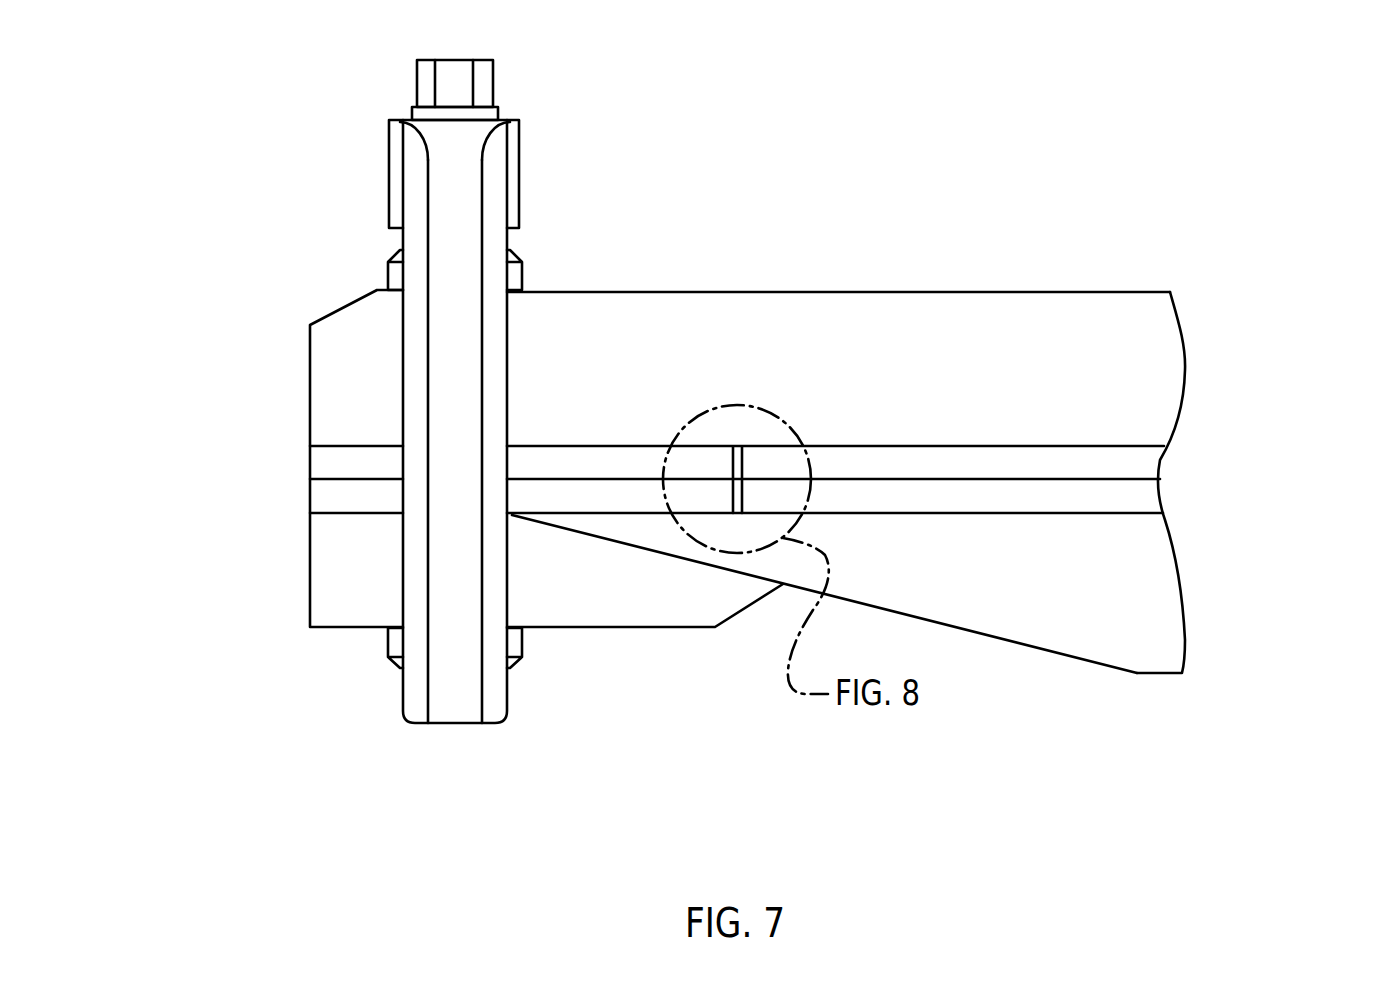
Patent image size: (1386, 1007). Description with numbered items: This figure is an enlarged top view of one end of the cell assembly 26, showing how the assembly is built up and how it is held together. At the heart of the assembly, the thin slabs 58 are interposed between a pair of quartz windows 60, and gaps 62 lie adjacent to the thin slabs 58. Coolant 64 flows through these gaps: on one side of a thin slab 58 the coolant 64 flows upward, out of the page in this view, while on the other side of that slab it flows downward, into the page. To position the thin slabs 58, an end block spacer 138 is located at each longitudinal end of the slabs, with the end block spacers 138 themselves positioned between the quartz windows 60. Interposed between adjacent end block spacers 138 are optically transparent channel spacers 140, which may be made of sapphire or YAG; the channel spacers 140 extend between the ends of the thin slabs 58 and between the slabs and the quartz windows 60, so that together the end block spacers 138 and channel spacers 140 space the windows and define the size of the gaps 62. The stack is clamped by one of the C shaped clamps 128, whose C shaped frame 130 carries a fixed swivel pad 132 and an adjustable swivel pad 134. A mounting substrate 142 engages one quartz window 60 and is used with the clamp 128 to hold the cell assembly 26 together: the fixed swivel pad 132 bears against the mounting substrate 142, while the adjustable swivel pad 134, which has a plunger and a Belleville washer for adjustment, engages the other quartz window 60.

The cell assembly 26 is at (1157, 180).
The thin slabs 58 is at (1147, 460).
The quartz windows 60 is at (855, 313).
The gaps 62 is at (895, 445).
The coolant 64 is at (1080, 445).
The clamp 128 is at (390, 199).
The C shaped frame 130 is at (463, 205).
The fixed swivel pad 132 is at (390, 645).
The adjustable swivel pad 134 is at (388, 275).
The end block spacers 138 is at (320, 459).
The channel spacers 140 is at (760, 445).
The mounting substrate 142 is at (327, 588).